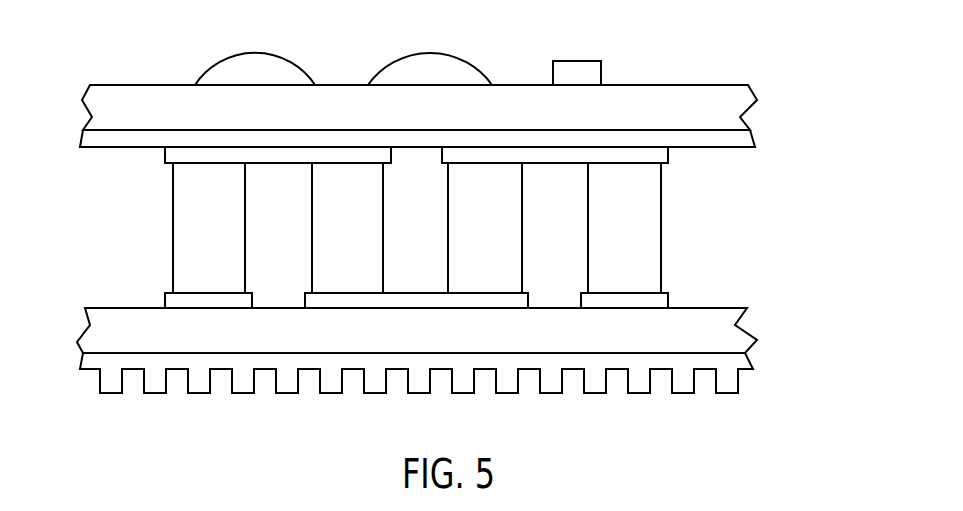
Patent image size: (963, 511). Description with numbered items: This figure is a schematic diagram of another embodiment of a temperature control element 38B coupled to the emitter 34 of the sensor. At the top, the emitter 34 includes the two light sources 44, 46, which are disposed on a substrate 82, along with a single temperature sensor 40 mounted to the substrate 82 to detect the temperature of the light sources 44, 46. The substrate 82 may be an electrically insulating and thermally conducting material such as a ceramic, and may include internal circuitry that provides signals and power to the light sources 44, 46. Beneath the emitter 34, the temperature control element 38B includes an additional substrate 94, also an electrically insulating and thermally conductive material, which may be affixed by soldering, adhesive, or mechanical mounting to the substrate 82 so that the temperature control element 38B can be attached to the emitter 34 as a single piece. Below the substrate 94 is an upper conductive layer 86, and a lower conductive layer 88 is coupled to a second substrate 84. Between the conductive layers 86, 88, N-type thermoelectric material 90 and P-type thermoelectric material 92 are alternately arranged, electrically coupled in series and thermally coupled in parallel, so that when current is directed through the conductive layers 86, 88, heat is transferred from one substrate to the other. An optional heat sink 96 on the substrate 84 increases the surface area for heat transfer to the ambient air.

The emitter 34 is at (771, 104).
The temperature control element 38B is at (756, 207).
The temperature sensor 40 is at (588, 62).
The light source 44 is at (232, 56).
The light source 46 is at (408, 53).
The substrate 82 is at (92, 92).
The substrate 84 is at (85, 315).
The conductive layer 86 is at (164, 152).
The conductive layer 88 is at (165, 300).
The N-type thermoelectric material 90 is at (246, 222).
The P-type thermoelectric material 92 is at (312, 230).
The substrate 94 is at (80, 138).
The heat sink 96 is at (78, 370).